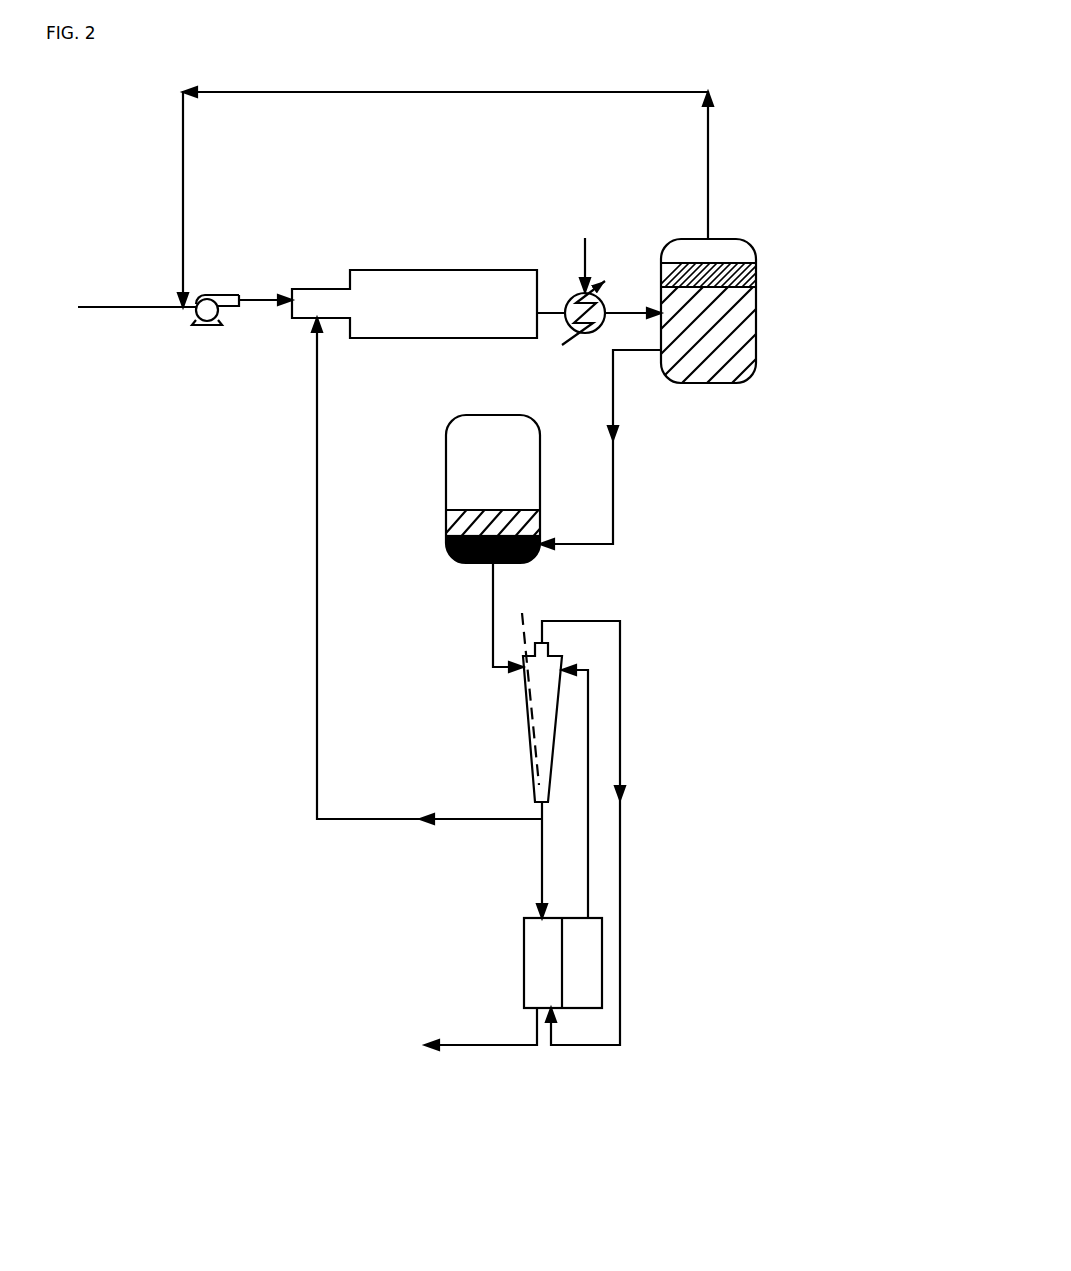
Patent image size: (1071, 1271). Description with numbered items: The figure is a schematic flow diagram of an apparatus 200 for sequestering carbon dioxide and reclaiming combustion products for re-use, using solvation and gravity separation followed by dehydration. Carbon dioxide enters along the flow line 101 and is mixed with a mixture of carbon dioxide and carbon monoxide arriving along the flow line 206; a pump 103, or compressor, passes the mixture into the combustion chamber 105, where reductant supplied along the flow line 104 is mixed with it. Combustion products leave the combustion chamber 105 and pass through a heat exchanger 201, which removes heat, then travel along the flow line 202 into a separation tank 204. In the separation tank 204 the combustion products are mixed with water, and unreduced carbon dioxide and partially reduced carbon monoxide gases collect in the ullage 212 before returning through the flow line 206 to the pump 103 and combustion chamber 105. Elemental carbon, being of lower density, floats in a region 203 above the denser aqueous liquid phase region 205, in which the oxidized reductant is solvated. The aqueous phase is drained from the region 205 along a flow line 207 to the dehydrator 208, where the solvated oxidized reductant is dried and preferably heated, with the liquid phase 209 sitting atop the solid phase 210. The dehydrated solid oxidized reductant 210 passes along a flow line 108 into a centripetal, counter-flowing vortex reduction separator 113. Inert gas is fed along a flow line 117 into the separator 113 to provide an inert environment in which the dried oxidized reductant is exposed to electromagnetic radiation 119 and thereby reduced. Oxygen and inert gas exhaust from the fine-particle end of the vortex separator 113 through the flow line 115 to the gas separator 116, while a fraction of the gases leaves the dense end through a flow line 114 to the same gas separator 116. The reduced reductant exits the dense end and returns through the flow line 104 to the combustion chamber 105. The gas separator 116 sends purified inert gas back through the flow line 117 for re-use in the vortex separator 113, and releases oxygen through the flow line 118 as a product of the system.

The flow line 101 is at (127, 307).
The pump 103 is at (207, 326).
The flow line 104 is at (317, 423).
The combustion chamber 105 is at (392, 270).
The flow line 108 is at (493, 640).
The vortex separator 113 is at (526, 726).
The flow line 114 is at (542, 878).
The flow line 115 is at (622, 840).
The gas separator 116 is at (522, 950).
The flow line 117 is at (590, 706).
The flow line 118 is at (475, 1048).
The electromagnetic radiation 119 is at (531, 772).
The apparatus 200 is at (252, 580).
The heat exchanger 201 is at (581, 251).
The flow line 202 is at (618, 318).
The region 203 is at (742, 261).
The separation tank 204 is at (760, 334).
The liquid phase region 205 is at (693, 385).
The flow line 206 is at (600, 92).
The flow line 207 is at (615, 485).
The dehydrator 208 is at (542, 470).
The liquid phase 209 is at (446, 520).
The solid phase 210 is at (470, 562).
The ullage 212 is at (718, 243).